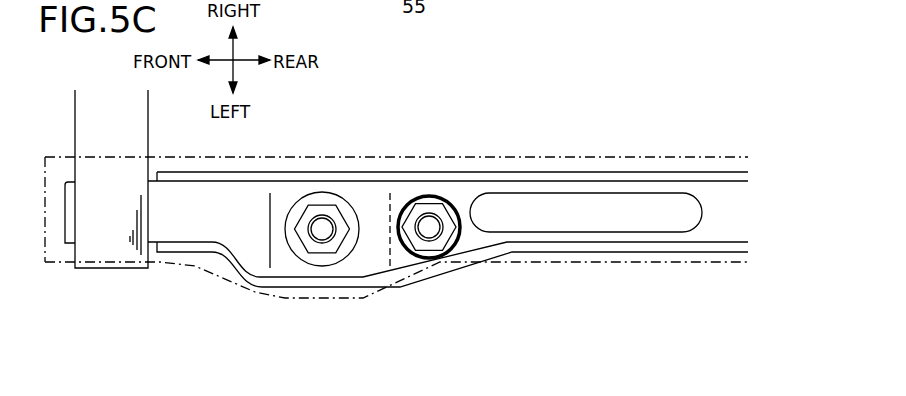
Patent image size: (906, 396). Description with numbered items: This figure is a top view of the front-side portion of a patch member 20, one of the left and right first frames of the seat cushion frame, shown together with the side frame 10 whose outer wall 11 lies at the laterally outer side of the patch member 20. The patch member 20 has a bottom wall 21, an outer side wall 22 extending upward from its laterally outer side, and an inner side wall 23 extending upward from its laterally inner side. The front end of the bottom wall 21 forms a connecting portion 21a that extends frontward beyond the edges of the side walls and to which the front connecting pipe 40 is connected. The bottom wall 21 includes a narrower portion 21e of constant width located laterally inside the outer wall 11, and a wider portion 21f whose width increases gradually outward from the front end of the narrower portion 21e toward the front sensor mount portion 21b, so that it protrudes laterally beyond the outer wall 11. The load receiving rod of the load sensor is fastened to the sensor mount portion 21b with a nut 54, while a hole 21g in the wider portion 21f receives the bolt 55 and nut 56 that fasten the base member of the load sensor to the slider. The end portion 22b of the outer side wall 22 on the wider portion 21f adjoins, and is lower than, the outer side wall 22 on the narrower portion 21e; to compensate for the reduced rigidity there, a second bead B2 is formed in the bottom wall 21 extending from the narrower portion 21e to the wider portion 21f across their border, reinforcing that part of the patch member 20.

The side frame 10 is at (548, 157).
The outer wall 11 is at (533, 262).
The patch member 20 is at (652, 172).
The bottom wall 21 is at (718, 223).
The connecting portion 21a is at (66, 238).
The sensor mount portion 21b is at (366, 188).
The narrower portion 21e is at (658, 240).
The wider portion 21f is at (430, 270).
The hole 21g is at (437, 203).
The outer side wall 22 is at (590, 250).
The end portion 22b is at (510, 253).
The inner side wall 23 is at (350, 176).
The connecting pipe 40 is at (118, 268).
The nut 54 is at (302, 213).
The bolt 55 is at (426, 220).
The nut 56 is at (401, 203).
The second bead B2 is at (610, 212).